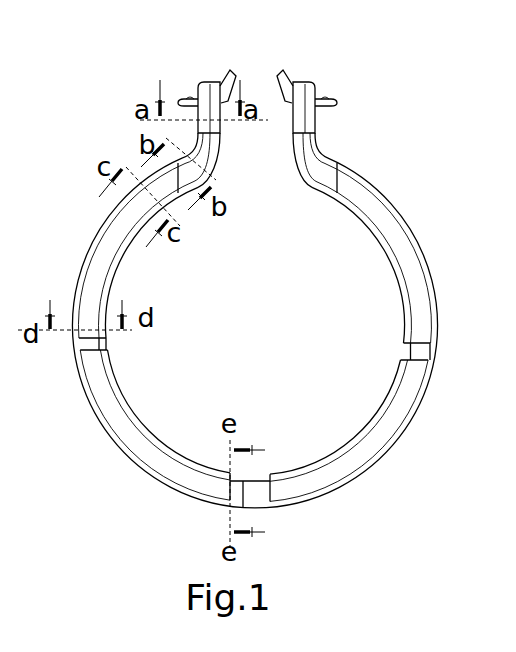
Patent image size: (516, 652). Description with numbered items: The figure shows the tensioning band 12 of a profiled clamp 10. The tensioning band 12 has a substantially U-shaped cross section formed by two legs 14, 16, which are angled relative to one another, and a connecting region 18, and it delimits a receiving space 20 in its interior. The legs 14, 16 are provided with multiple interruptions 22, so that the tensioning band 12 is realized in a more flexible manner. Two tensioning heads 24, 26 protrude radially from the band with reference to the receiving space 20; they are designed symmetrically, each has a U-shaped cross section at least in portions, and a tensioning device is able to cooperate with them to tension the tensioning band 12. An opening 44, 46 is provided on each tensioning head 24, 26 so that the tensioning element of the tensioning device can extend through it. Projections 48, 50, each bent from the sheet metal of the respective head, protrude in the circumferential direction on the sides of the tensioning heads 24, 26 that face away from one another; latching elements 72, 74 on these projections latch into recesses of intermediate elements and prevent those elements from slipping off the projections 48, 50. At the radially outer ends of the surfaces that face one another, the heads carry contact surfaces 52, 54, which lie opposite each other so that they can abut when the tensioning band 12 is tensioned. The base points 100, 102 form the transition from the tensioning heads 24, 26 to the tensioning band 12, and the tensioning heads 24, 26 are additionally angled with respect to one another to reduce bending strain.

The profiled clamp 10 is at (390, 92).
The tensioning band 12 is at (372, 212).
The leg 14 is at (417, 293).
The leg 16 is at (254, 330).
The connecting region 18 is at (412, 226).
The receiving space 20 is at (247, 324).
The interruptions 22 is at (93, 354).
The tensioning head 24 is at (198, 128).
The tensioning head 26 is at (315, 119).
The opening 44 is at (222, 140).
The opening 46 is at (293, 120).
The projection 48 is at (178, 100).
The projection 50 is at (336, 100).
The contact surface 52 is at (230, 72).
The contact surface 54 is at (284, 72).
The latching element 72 is at (190, 99).
The latching element 74 is at (325, 99).
The base point 100 is at (221, 150).
The base point 102 is at (303, 158).